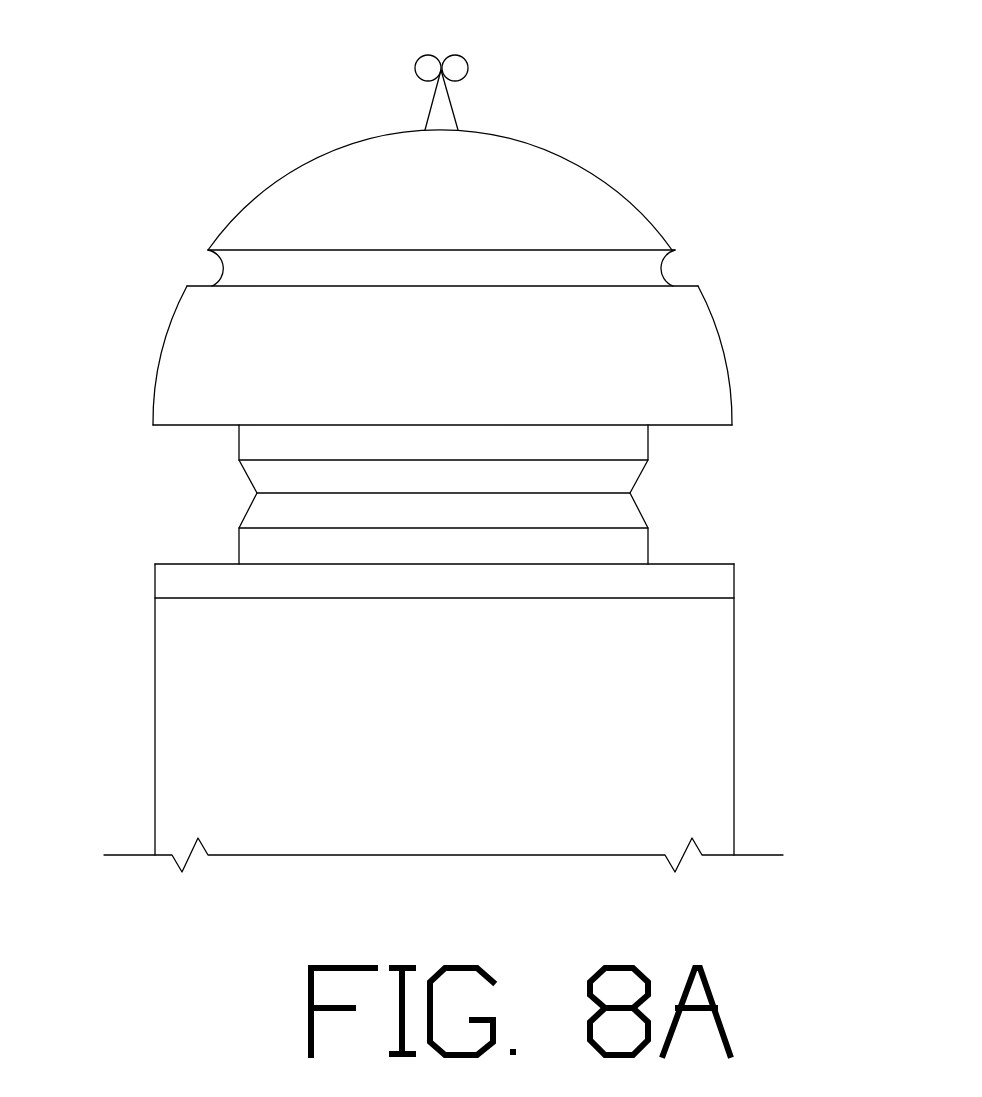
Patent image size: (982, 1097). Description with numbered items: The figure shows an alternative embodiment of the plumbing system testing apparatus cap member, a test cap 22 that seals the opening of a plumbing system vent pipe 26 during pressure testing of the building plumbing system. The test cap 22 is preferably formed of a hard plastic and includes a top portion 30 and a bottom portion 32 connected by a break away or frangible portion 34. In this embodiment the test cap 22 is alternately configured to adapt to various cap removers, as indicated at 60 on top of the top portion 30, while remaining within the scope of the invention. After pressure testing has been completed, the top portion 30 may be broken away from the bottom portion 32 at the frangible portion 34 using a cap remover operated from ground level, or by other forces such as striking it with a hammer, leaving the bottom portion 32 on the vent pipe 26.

The test cap 22 is at (136, 82).
The plumbing system vent pipe 26 is at (735, 713).
The top portion 30 is at (586, 146).
The bottom portion 32 is at (781, 564).
The break away or frangible portion 34 is at (716, 477).
The alternate cap configuration 60 is at (460, 55).